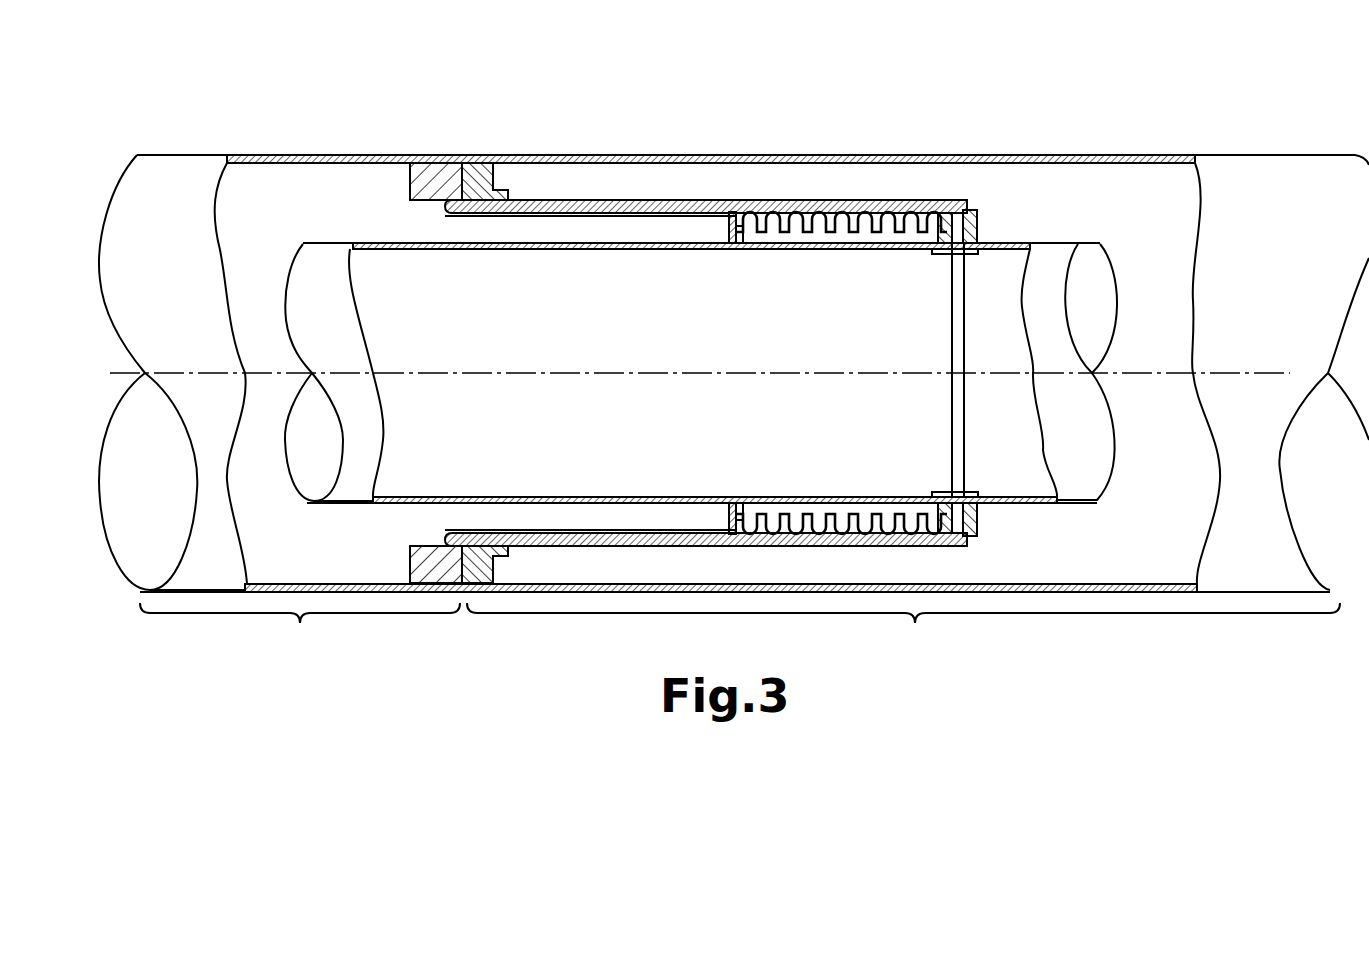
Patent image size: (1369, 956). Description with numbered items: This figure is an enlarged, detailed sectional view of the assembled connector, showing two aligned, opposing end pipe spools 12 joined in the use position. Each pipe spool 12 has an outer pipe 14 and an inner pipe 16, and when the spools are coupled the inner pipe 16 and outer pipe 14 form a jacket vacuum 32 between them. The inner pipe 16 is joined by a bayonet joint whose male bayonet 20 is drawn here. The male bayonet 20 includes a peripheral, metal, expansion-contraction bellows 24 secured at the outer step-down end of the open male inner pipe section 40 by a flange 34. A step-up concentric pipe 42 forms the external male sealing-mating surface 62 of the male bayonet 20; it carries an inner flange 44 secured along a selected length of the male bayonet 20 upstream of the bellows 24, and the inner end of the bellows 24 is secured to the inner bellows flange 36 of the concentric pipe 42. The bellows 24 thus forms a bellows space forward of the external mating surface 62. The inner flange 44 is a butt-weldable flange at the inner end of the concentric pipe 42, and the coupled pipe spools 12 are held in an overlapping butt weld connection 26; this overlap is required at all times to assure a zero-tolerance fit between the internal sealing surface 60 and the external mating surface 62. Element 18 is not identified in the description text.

The end pipe spool 12 is at (740, 632).
The outer pipe 14 is at (240, 152).
The inner pipe 16 is at (363, 240).
The flange block 18 is at (435, 160).
The male bayonet 20 is at (718, 194).
The expansion-contraction bellows 24 is at (889, 211).
The butt weld connection 26 is at (408, 182).
The jacket vacuum 32 is at (272, 241).
The flange 34 is at (942, 213).
The inner bellows flange 36 is at (740, 198).
The male inner pipe section 40 is at (967, 288).
The concentric pipe 42 is at (693, 200).
The inner flange 44 is at (727, 230).
The internal sealing surface 60 is at (565, 200).
The external sealing-mating surface 62 is at (640, 200).